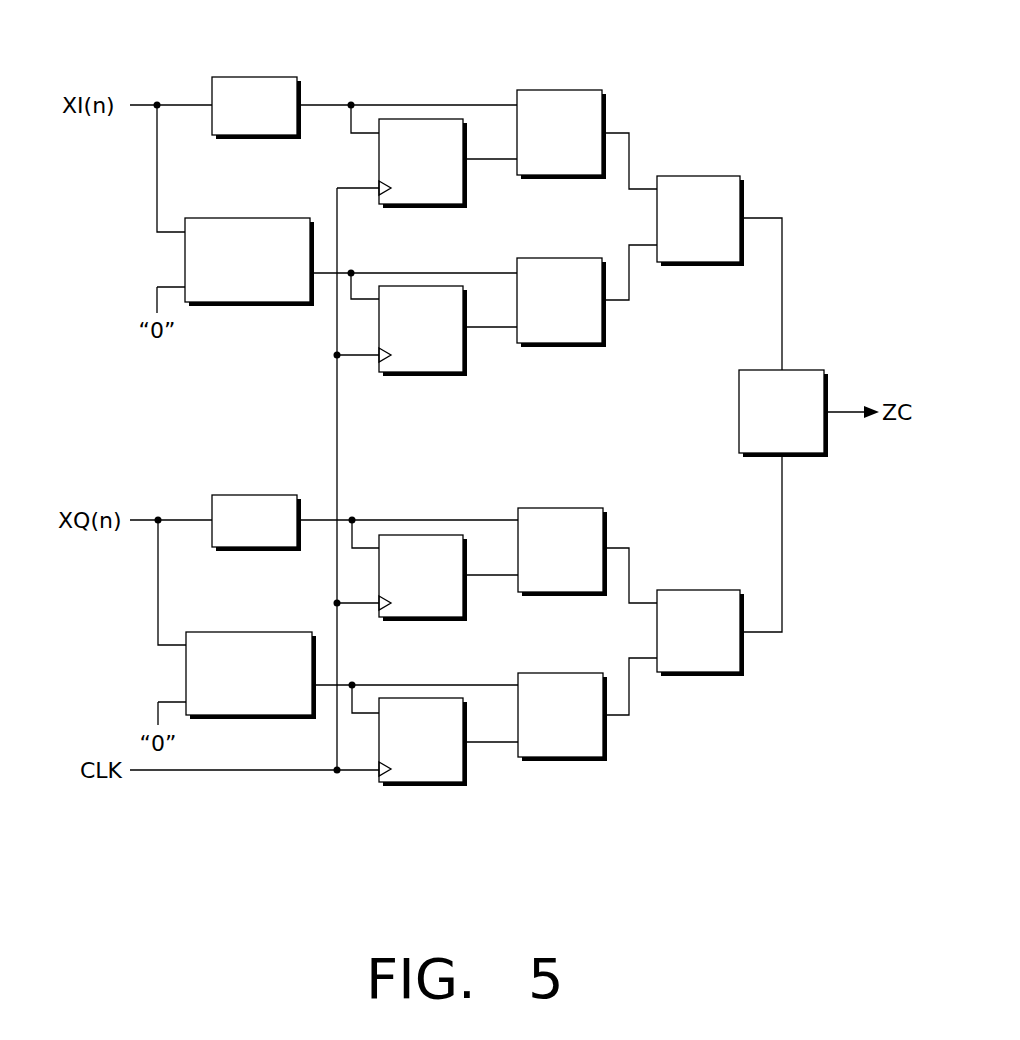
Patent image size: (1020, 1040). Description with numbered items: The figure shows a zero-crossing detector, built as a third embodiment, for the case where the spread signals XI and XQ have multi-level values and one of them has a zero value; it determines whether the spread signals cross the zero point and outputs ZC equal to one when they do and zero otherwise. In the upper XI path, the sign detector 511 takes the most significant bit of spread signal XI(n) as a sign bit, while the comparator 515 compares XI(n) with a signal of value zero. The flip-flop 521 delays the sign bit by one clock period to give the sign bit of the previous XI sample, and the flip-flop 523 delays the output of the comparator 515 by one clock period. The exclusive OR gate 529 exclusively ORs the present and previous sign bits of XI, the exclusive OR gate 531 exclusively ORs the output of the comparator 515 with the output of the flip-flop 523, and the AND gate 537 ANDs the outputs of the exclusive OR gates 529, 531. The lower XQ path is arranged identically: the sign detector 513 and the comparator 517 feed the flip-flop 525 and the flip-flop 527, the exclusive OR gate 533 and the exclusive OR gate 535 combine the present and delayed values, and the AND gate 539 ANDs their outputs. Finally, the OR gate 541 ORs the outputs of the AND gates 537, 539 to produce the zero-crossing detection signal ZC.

The sign detector 511 is at (253, 77).
The sign detector 513 is at (253, 495).
The comparator 515 is at (253, 218).
The comparator 517 is at (253, 632).
The flip-flop 521 is at (422, 204).
The flip-flop 523 is at (422, 372).
The flip-flop 525 is at (422, 617).
The flip-flop 527 is at (422, 782).
The exclusive OR gate 529 is at (558, 90).
The exclusive OR gate 531 is at (562, 343).
The exclusive OR gate 533 is at (560, 508).
The exclusive OR gate 535 is at (560, 757).
The AND gate 537 is at (697, 176).
The AND gate 539 is at (698, 590).
The OR gate 541 is at (810, 370).